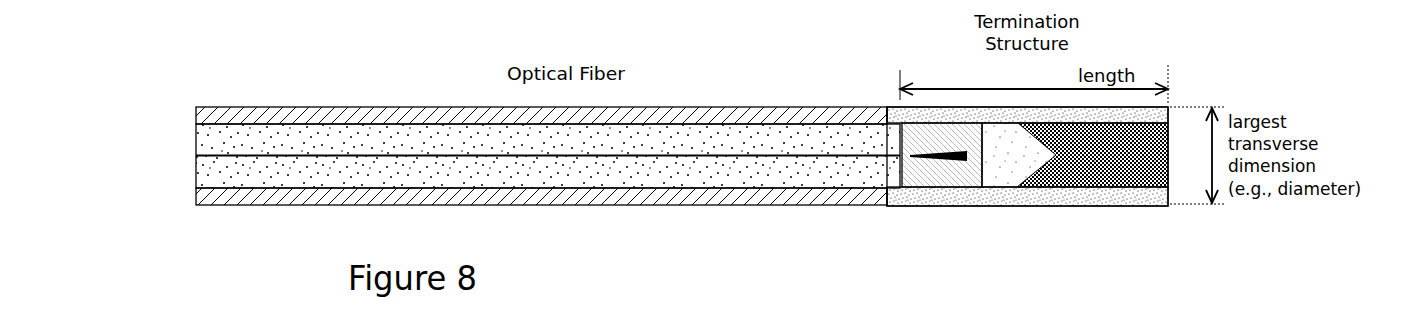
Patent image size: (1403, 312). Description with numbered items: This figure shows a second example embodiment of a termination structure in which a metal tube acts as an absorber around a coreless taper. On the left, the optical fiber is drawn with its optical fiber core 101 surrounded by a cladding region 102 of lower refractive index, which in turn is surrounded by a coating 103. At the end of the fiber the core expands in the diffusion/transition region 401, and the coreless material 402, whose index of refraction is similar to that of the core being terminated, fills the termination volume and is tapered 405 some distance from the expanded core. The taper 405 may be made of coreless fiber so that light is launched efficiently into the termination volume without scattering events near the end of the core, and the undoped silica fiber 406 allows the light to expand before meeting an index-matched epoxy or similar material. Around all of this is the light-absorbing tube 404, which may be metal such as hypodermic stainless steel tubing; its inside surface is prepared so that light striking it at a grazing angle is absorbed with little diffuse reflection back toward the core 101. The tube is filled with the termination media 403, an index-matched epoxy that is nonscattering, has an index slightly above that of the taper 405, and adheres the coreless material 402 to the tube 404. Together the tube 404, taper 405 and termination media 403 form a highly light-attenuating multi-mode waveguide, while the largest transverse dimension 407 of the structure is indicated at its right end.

The optical fiber core 101 is at (620, 156).
The cladding region 102 is at (242, 170).
The coating 103 is at (273, 106).
The diffusion/transition region 401 is at (935, 163).
The coreless material 402 is at (997, 160).
The termination media 403 is at (1138, 155).
The light-absorbing tube 404 is at (1133, 203).
The taper 405 is at (1035, 158).
The undoped silica fiber 406 is at (1060, 157).
The outer surface 407 is at (1172, 128).